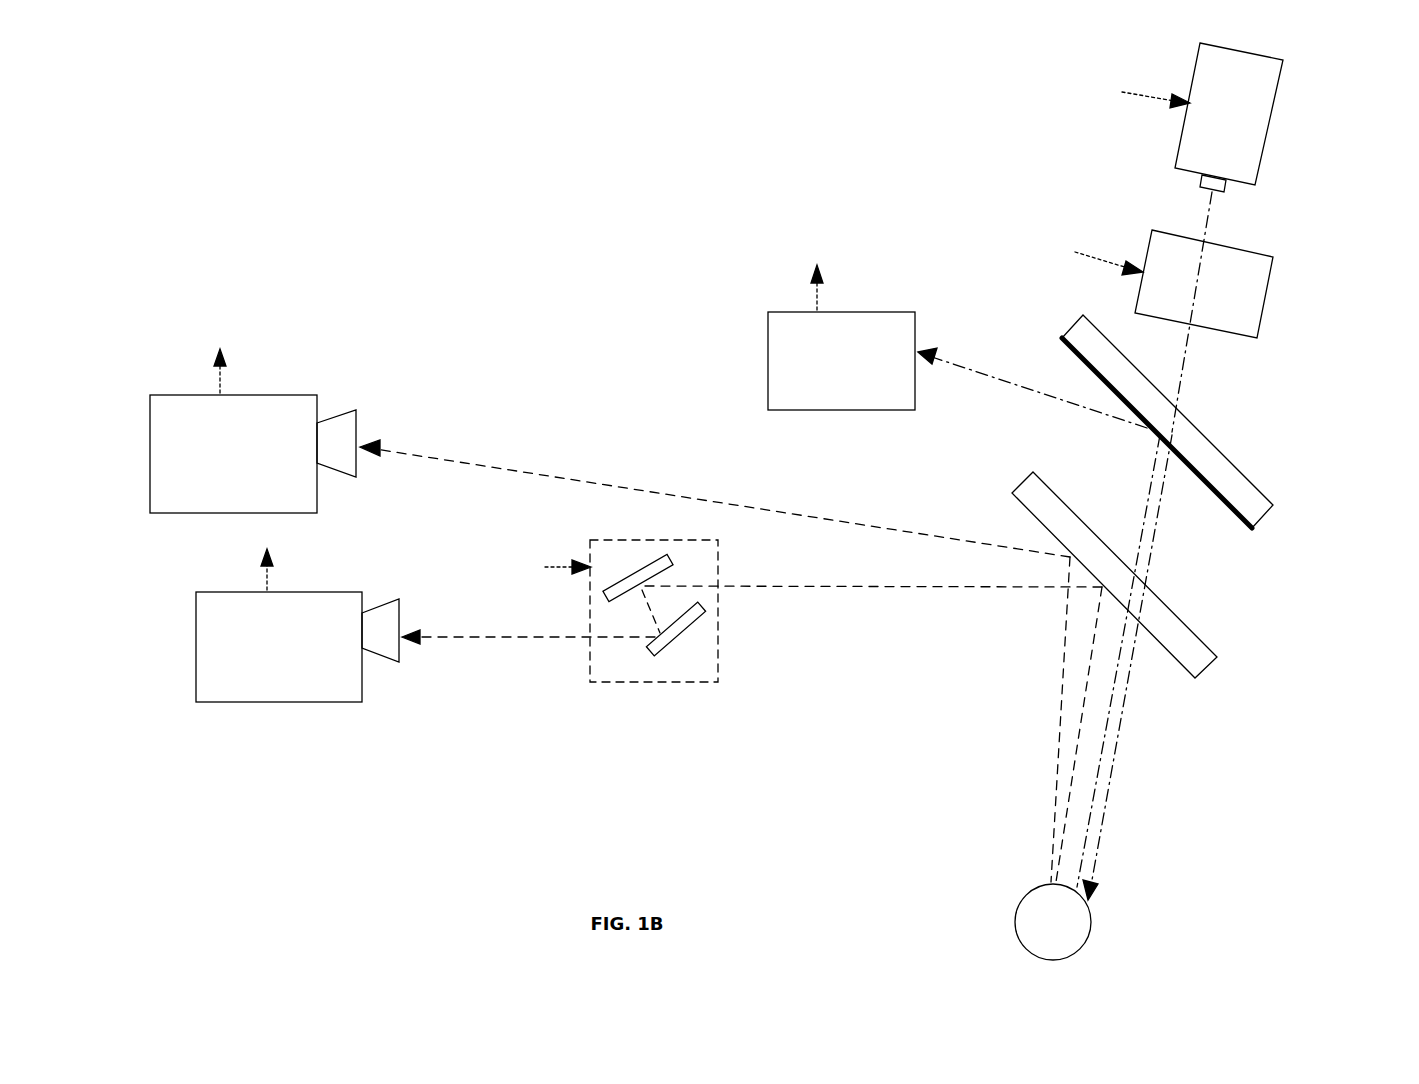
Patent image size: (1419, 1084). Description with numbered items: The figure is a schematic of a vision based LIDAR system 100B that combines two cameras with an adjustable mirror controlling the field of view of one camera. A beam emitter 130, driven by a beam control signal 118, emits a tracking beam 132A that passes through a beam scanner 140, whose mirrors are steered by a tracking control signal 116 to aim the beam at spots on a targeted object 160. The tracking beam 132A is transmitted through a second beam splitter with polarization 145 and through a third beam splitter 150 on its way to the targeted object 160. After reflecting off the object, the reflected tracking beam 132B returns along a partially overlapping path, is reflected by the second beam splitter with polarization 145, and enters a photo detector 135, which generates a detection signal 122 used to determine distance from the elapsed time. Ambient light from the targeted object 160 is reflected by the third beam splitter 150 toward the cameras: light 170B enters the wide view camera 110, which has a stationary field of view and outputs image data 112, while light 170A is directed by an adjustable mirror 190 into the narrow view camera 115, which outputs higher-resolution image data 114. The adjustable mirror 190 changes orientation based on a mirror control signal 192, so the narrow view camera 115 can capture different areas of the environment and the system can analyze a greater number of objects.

The vision based LIDAR system 100B is at (177, 103).
The wide view camera 110 is at (253, 454).
The image data 112 is at (216, 374).
The image data 114 is at (263, 572).
The narrow view camera 115 is at (297, 647).
The tracking control signal 116 is at (1100, 256).
The beam control signal 118 is at (1140, 92).
The detection signal 122 is at (811, 272).
The beam emitter 130 is at (1280, 107).
The tracking beam 132A is at (1117, 737).
The reflected tracking beam 132B is at (1107, 708).
The photo detector 135 is at (841, 361).
The beam scanner 140 is at (1275, 263).
The second beam splitter with polarization 145 is at (1245, 470).
The third beam splitter 150 is at (1200, 637).
The targeted object 160 is at (1025, 893).
The light 170A is at (1002, 588).
The light 170B is at (950, 528).
The adjustable mirror 190 is at (720, 608).
The mirror control signal 192 is at (561, 563).